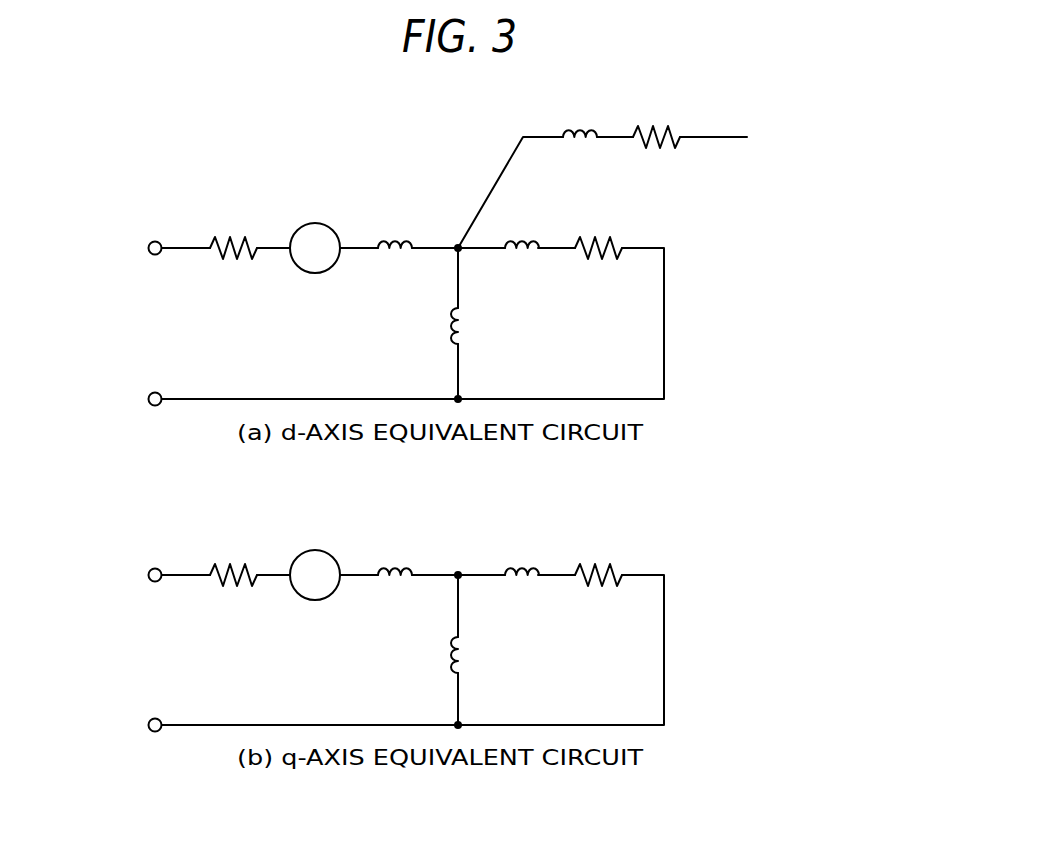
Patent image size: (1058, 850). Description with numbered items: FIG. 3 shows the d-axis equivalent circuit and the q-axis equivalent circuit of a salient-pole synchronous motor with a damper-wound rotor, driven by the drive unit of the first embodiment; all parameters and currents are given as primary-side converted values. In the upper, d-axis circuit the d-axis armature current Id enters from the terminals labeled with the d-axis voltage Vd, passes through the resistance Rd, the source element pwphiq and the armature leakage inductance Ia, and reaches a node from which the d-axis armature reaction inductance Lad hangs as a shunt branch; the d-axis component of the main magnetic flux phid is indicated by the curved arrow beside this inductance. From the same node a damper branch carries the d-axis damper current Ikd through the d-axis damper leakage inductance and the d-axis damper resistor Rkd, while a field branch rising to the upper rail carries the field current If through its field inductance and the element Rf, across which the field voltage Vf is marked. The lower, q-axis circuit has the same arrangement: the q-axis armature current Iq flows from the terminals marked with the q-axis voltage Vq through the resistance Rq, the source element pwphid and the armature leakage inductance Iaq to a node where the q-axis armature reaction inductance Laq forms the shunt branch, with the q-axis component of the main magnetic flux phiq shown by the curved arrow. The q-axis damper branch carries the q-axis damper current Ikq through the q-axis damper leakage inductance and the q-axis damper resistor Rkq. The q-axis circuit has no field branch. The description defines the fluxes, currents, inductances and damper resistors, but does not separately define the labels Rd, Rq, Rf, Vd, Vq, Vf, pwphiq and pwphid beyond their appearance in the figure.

The d-axis armature resistance Rd is at (233, 233).
The d-axis speed voltage source pwphiq is at (314, 267).
The armature leakage inductance Ia is at (395, 228).
The d-axis armature current Id is at (354, 198).
The d-axis armature reaction inductance Lad is at (481, 327).
The d-axis damper current Ikd is at (632, 198).
The d-axis damper resistor Rkd is at (598, 233).
The field current If is at (461, 175).
The field winding resistance Rf is at (656, 122).
The field voltage Vf is at (723, 152).
The d-axis voltage Vd is at (155, 270).
The d-axis component of the main magnetic flux phid is at (438, 383).
The q-axis armature resistance Rq is at (233, 560).
The q-axis speed voltage source pwphid is at (314, 594).
The armature leakage inductance Iaq is at (395, 555).
The q-axis armature current Iq is at (354, 523).
The q-axis armature reaction inductance Laq is at (480, 655).
The q-axis damper current Ikq is at (607, 518).
The q-axis damper resistor Rkq is at (598, 560).
The q-axis voltage Vq is at (155, 597).
The q-axis component of the main magnetic flux phiq is at (437, 710).